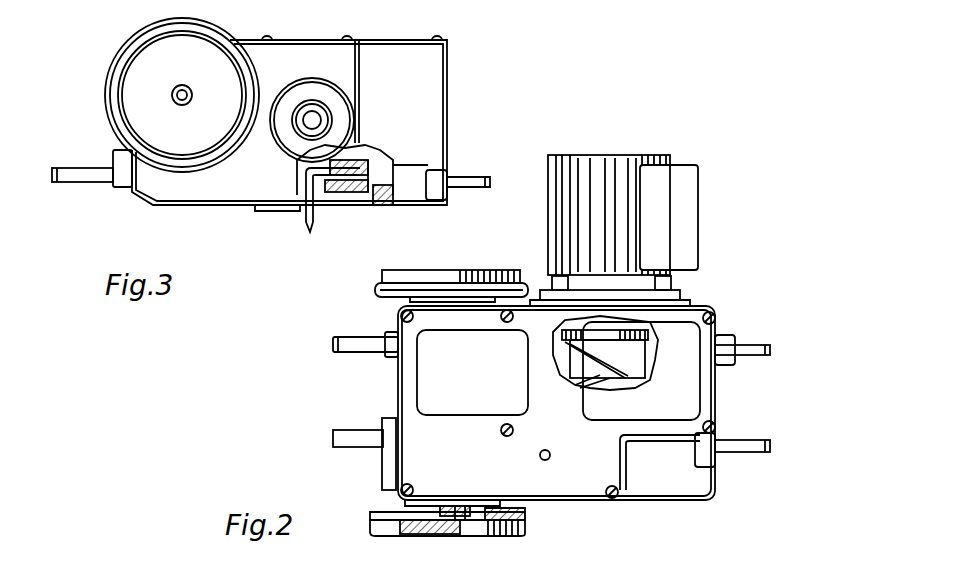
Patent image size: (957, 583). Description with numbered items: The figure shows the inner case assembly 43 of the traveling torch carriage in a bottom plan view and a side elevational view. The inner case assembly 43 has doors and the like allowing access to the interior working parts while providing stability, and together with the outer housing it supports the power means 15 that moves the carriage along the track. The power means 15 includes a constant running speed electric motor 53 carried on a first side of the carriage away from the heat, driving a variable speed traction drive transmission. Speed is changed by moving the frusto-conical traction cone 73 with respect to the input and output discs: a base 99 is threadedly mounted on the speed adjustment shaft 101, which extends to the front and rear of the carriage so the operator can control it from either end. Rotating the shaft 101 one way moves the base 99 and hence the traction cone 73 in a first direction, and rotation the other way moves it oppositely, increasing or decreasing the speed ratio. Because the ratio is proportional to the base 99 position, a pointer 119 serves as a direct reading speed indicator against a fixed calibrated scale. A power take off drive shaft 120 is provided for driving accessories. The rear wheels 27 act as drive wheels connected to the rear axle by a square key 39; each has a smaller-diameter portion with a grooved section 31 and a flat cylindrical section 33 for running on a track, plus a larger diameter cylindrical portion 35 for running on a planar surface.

In FIG. 2, the power means 15 is at (755, 275).
In FIG. 3, the rear wheels 27 is at (148, 77).
In FIG. 2, the rear wheels 27 is at (456, 270).
In FIG. 2, the grooved section 31 is at (520, 518).
In FIG. 3, the cylindrical section 33 is at (312, 120).
In FIG. 2, the cylindrical section 33 is at (378, 275).
In FIG. 2, the larger diameter cylindrical portion 35 is at (372, 292).
In FIG. 2, the square key 39 is at (446, 516).
In FIG. 3, the inner case assembly 43 is at (430, 68).
In FIG. 2, the inner case assembly 43 is at (552, 482).
In FIG. 2, the electric motor 53 is at (592, 155).
In FIG. 2, the traction cone 73 is at (595, 383).
In FIG. 3, the base 99 is at (350, 186).
In FIG. 3, the threaded shaft 101 is at (78, 185).
In FIG. 2, the threaded shaft 101 is at (745, 345).
In FIG. 3, the pointer 119 is at (305, 222).
In FIG. 2, the power take off drive shaft 120 is at (551, 458).